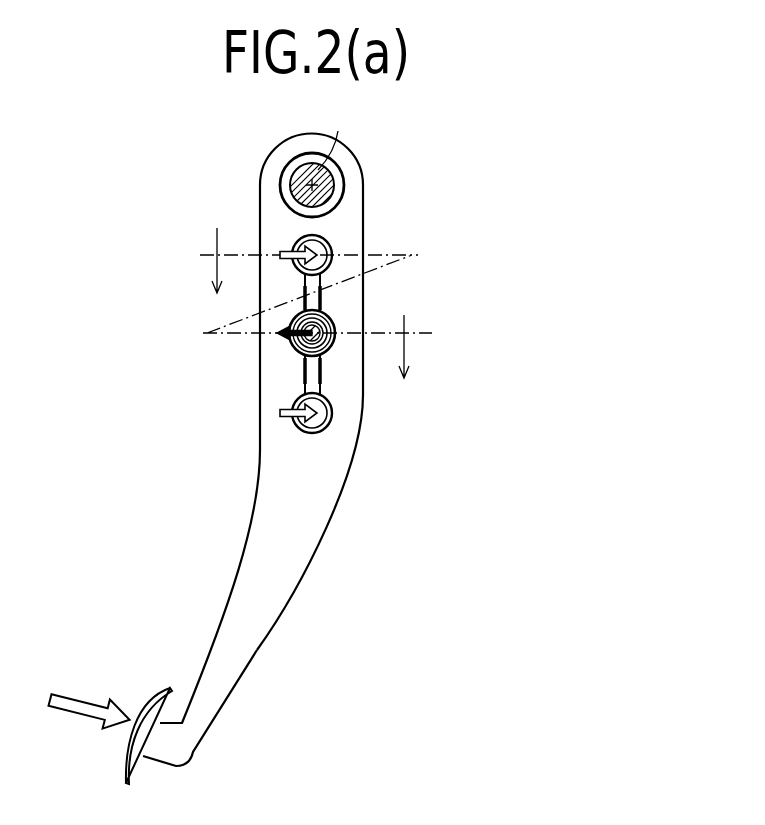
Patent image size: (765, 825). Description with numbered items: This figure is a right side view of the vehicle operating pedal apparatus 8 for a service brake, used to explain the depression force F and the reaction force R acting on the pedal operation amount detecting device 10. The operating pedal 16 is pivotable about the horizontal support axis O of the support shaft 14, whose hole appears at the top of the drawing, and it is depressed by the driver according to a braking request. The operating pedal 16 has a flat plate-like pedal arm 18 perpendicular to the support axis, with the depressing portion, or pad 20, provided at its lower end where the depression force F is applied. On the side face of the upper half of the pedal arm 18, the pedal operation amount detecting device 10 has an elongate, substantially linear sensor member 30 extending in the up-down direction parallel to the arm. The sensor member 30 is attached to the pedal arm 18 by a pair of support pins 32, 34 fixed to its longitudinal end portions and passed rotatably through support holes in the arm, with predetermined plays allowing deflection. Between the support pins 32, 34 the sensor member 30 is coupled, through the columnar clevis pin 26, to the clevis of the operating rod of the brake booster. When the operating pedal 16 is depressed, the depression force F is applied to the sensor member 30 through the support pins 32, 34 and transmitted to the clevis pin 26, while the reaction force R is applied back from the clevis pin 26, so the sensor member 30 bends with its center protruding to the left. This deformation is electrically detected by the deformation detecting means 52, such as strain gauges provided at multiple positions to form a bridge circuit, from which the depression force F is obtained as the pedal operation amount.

The vehicle operating pedal apparatus 8 is at (178, 158).
The pedal operation amount detecting device 10 is at (230, 360).
The support shaft 14 is at (296, 171).
The operating pedal 16 is at (298, 640).
The pedal arm 18 is at (263, 582).
The depressing portion (pad) 20 is at (163, 760).
The clevis pin 26 is at (332, 322).
The sensor member 30 is at (310, 384).
The support pin 32 is at (330, 247).
The support pin 34 is at (333, 422).
The deformation detecting means 52 is at (305, 299).